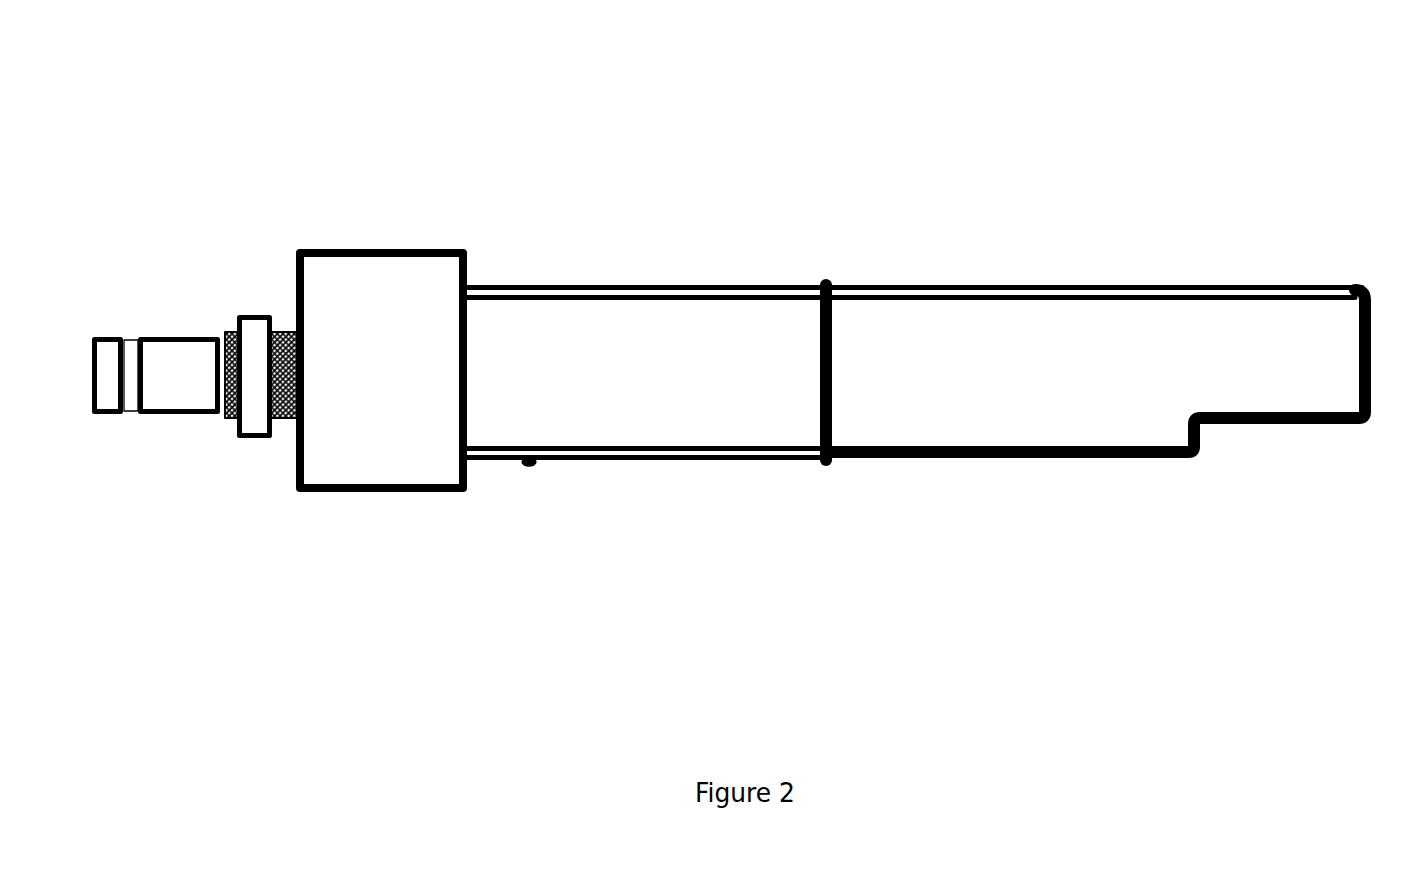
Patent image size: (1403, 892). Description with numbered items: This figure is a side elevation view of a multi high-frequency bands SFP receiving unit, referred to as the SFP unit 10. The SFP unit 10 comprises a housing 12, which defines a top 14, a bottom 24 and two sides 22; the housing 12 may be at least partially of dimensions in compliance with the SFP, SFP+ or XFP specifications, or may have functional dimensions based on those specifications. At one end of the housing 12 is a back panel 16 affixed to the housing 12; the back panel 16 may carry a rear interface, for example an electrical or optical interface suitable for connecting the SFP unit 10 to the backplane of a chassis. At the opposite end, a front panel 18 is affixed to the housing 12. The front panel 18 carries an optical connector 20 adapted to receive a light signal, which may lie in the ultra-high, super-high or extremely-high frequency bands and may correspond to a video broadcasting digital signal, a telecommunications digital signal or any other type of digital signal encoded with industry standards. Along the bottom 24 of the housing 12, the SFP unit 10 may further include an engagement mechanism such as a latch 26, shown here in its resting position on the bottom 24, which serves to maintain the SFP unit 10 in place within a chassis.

The SFP unit 10 is at (1091, 70).
The housing 12 is at (997, 358).
The top 14 is at (787, 285).
The back panel 16 is at (1372, 323).
The front panel 18 is at (292, 272).
The optical connector 20 is at (193, 392).
The sides 22 is at (717, 391).
The bottom 24 is at (727, 460).
The latch 26 is at (525, 465).